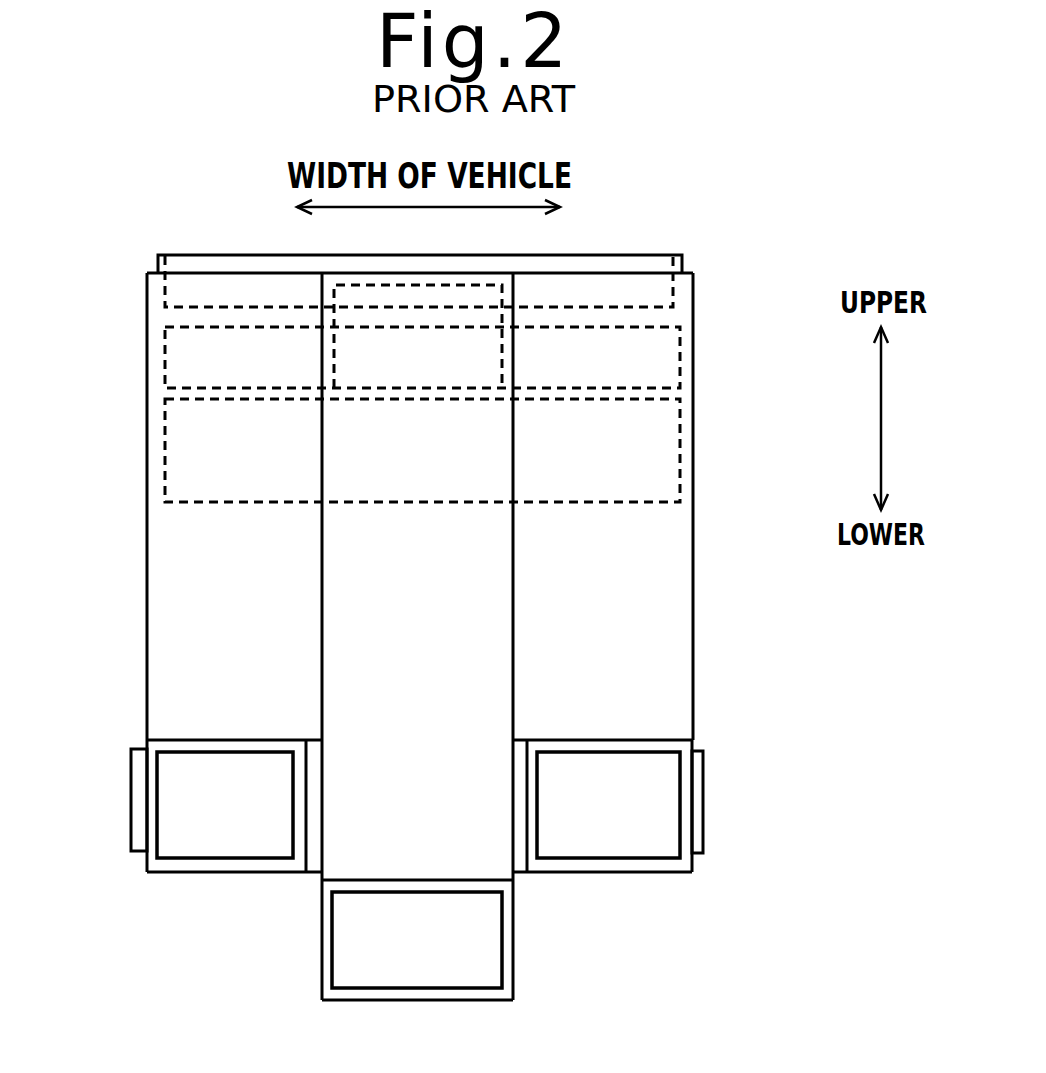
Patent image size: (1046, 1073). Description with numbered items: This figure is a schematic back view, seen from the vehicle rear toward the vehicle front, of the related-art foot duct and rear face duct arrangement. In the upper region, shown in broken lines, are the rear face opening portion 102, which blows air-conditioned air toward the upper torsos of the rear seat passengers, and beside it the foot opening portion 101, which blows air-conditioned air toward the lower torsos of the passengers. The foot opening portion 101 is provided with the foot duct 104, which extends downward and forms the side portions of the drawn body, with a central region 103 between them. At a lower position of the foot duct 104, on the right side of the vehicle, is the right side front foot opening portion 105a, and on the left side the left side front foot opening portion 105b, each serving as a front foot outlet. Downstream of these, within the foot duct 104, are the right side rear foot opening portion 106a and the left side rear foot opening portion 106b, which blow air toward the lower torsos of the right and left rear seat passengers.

The foot opening portion 101 is at (658, 458).
The rear face opening portion 102 is at (658, 360).
The center panel 103 is at (342, 640).
The foot duct 104 is at (147, 558).
The right side front foot opening portion 105a is at (703, 820).
The left side front foot opening portion 105b is at (128, 815).
The right side rear foot opening portion 106a is at (613, 833).
The left side rear foot opening portion 106b is at (243, 833).